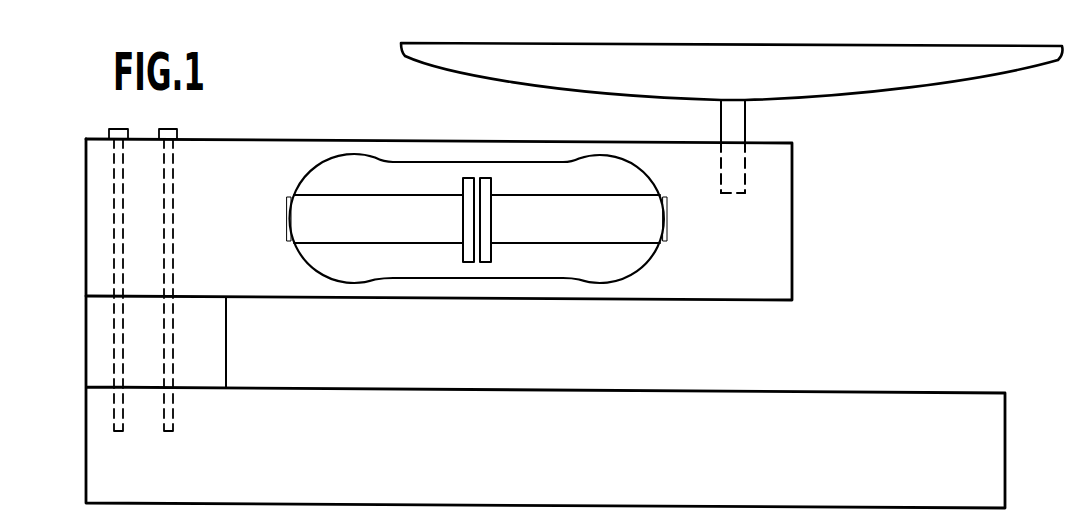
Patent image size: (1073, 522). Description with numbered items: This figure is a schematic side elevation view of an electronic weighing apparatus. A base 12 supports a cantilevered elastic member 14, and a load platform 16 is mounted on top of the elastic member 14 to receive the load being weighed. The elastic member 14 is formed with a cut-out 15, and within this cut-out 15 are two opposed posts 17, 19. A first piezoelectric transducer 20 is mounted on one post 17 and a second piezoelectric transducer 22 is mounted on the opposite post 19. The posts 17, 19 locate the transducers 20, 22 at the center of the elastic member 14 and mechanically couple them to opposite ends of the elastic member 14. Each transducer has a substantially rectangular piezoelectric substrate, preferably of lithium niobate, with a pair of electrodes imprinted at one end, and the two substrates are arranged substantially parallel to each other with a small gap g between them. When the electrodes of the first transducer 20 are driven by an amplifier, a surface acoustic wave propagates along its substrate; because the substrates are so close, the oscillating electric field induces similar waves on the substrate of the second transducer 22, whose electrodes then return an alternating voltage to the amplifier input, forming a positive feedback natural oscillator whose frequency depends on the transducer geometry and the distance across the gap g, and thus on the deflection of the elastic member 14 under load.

The base 12 is at (745, 461).
The cantilevered elastic member 14 is at (734, 290).
The cut-out 15 is at (543, 263).
The load platform 16 is at (891, 82).
The post 17 is at (365, 231).
The post 19 is at (577, 231).
The first piezoelectric transducer 20 is at (462, 181).
The second piezoelectric transducer 22 is at (492, 181).
The gap g is at (479, 268).